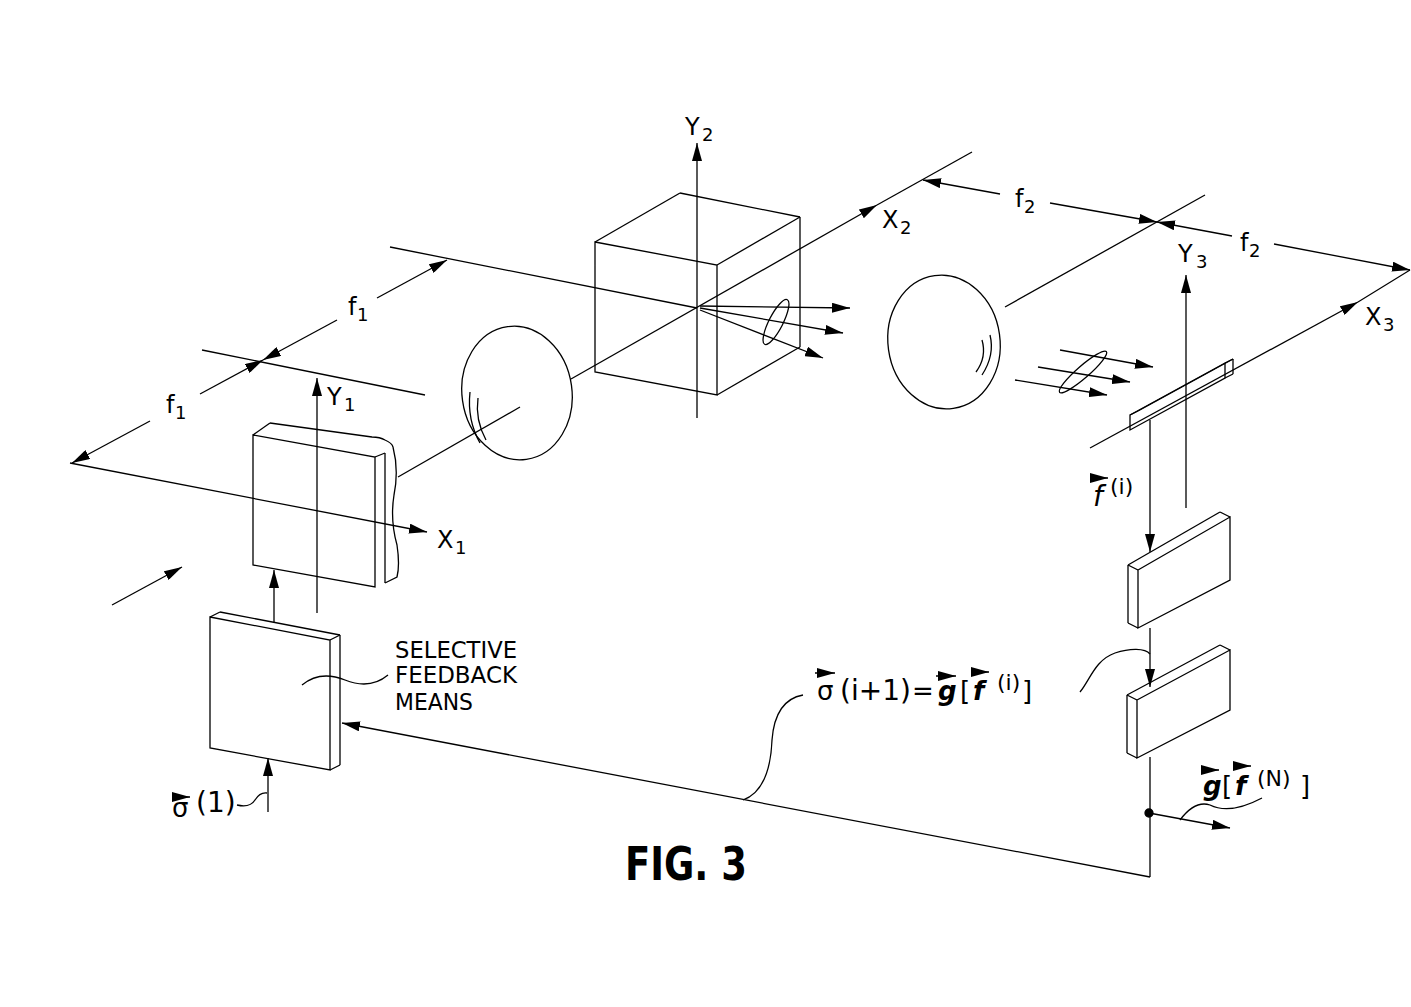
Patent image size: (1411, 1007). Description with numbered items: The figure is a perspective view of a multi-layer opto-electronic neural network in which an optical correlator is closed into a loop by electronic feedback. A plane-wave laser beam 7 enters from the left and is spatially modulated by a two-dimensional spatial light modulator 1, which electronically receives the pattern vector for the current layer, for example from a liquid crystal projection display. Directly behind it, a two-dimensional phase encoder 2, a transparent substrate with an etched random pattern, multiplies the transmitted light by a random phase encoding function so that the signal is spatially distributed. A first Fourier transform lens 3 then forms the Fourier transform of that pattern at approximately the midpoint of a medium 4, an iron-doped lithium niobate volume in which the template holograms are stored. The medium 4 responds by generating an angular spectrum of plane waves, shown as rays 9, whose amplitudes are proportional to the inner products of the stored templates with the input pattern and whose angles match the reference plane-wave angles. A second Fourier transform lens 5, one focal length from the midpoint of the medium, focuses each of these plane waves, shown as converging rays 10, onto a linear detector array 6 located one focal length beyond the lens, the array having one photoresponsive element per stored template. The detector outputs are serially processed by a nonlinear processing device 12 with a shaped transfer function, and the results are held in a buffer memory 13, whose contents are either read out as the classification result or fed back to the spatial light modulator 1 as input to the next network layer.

The spatial light modulator 1 is at (350, 587).
The phase encoder 2 is at (393, 572).
The first Fourier transform lens 3 is at (557, 442).
The medium 4 is at (747, 205).
The second Fourier transform lens 5 is at (967, 405).
The linear detector array 6 is at (1223, 387).
The plane-wave laser beam 7 is at (132, 595).
The rays 9 is at (767, 343).
The rays 10 is at (1062, 393).
The nonlinear processing device 12 is at (1232, 533).
The buffer memory 13 is at (1232, 673).